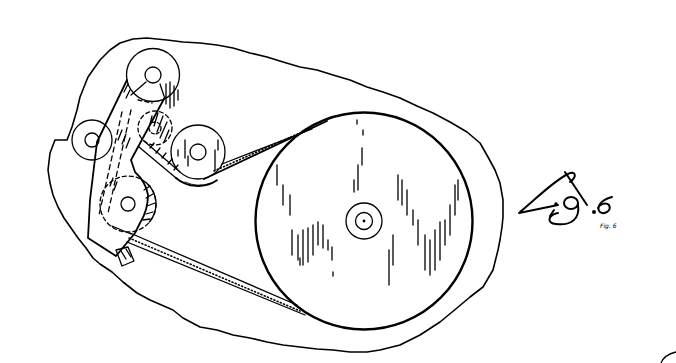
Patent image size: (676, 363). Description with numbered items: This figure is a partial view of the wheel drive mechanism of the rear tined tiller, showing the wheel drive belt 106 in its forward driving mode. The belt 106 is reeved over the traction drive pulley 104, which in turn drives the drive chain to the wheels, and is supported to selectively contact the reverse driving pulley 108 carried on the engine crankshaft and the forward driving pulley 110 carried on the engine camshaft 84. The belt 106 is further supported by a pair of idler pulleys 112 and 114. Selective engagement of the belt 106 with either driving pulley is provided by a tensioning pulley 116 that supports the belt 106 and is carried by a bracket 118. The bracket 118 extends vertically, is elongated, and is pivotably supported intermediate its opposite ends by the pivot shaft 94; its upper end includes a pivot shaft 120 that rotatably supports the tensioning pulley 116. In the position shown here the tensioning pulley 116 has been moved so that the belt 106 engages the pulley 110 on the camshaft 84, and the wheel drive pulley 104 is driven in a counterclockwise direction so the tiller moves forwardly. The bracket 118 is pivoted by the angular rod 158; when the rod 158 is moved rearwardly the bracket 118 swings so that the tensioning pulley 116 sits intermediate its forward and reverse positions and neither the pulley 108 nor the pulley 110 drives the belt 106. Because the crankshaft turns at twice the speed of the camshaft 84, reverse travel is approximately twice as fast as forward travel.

The engine camshaft 84 is at (167, 122).
The pivot shaft 94 is at (120, 203).
The traction drive pulley 104 is at (262, 235).
The wheel drive belt 106 is at (227, 277).
The reverse driving pulley 108 is at (77, 138).
The forward driving pulley 110 is at (178, 124).
The idler pulley 112 is at (152, 210).
The idler pulley 114 is at (205, 178).
The tensioning pulley 116 is at (155, 57).
The bracket 118 is at (125, 100).
The pivot shaft 120 is at (160, 76).
The angular rod 158 is at (130, 263).